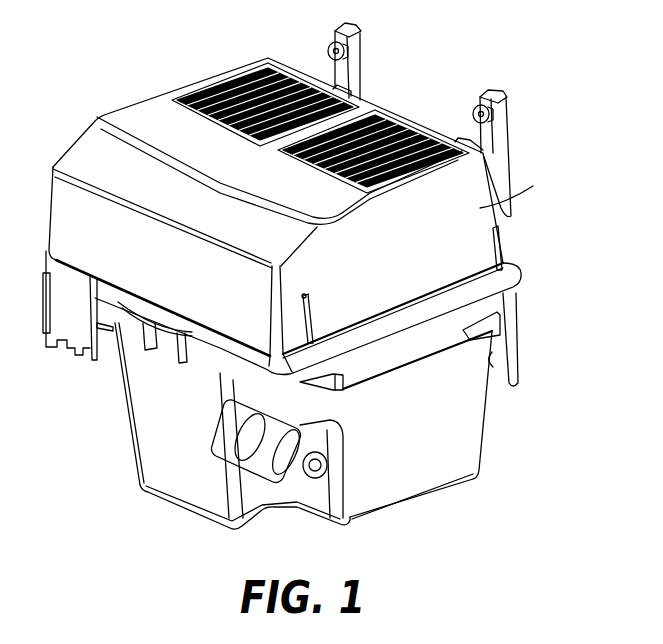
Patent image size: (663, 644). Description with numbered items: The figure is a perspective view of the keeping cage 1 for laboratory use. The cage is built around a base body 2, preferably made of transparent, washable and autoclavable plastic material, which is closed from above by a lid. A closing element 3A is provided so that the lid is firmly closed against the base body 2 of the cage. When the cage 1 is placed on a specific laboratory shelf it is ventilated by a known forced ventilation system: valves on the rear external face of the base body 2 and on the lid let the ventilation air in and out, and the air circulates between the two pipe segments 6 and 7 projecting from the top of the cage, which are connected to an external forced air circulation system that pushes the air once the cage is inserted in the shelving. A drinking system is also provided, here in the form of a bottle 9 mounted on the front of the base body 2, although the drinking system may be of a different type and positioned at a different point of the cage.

The keeping cage 1 is at (78, 97).
The base body 2 is at (470, 437).
The closing element 3A is at (160, 340).
The pipe segment 6 is at (357, 49).
The pipe segment 7 is at (500, 114).
The bottle 9 is at (273, 460).